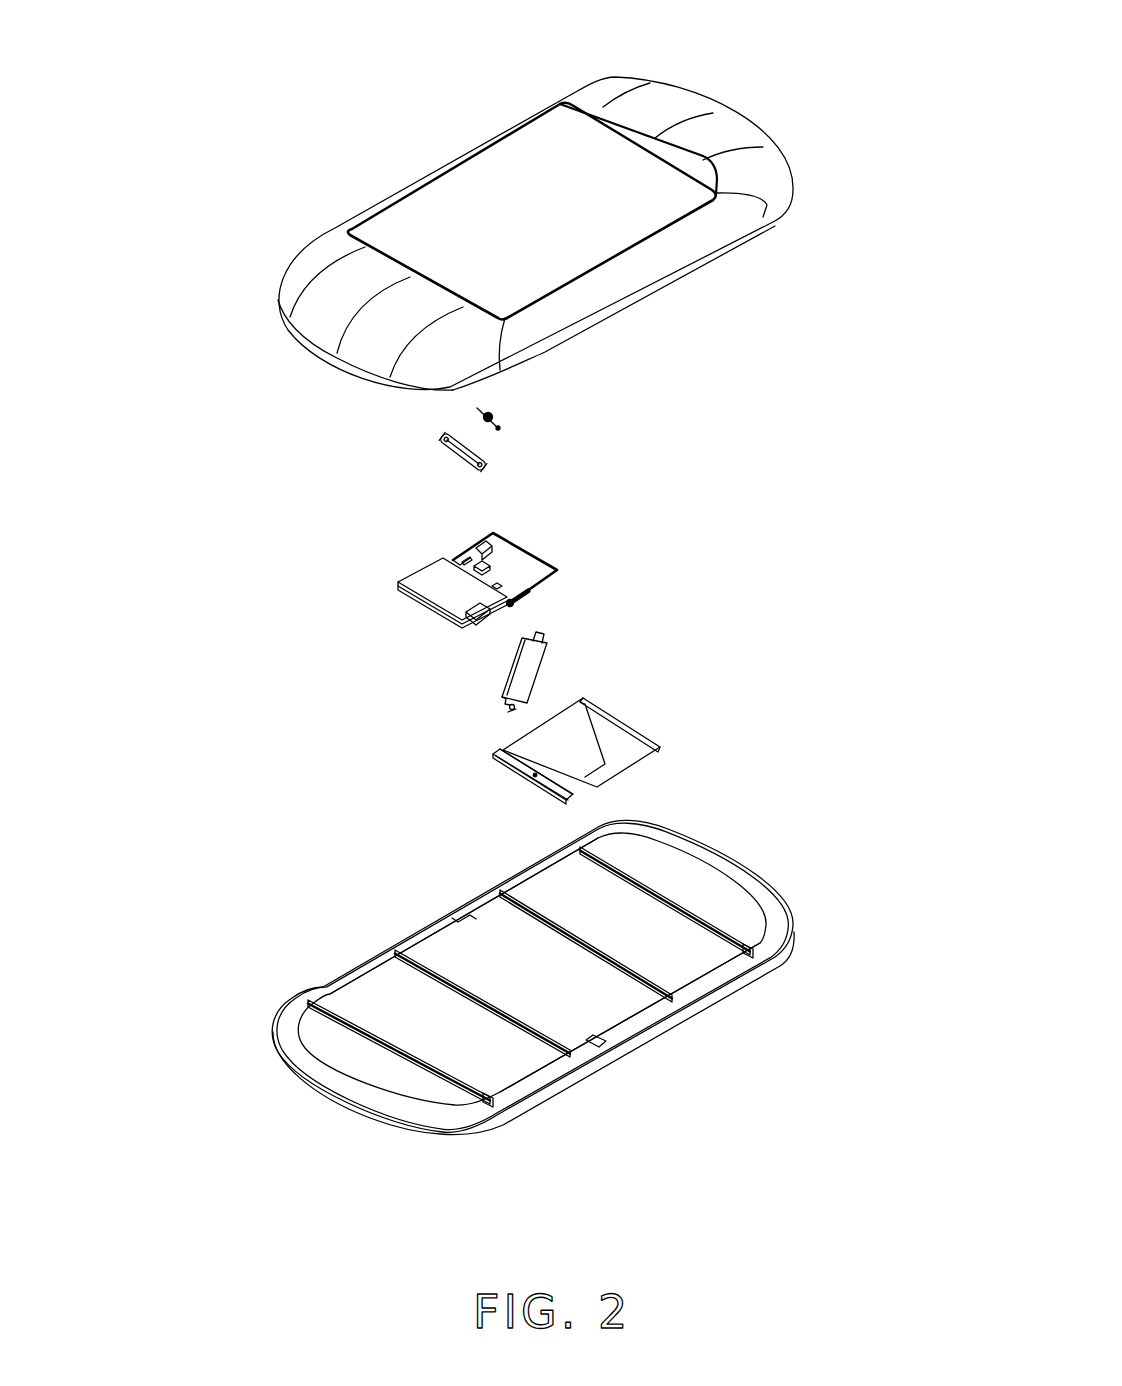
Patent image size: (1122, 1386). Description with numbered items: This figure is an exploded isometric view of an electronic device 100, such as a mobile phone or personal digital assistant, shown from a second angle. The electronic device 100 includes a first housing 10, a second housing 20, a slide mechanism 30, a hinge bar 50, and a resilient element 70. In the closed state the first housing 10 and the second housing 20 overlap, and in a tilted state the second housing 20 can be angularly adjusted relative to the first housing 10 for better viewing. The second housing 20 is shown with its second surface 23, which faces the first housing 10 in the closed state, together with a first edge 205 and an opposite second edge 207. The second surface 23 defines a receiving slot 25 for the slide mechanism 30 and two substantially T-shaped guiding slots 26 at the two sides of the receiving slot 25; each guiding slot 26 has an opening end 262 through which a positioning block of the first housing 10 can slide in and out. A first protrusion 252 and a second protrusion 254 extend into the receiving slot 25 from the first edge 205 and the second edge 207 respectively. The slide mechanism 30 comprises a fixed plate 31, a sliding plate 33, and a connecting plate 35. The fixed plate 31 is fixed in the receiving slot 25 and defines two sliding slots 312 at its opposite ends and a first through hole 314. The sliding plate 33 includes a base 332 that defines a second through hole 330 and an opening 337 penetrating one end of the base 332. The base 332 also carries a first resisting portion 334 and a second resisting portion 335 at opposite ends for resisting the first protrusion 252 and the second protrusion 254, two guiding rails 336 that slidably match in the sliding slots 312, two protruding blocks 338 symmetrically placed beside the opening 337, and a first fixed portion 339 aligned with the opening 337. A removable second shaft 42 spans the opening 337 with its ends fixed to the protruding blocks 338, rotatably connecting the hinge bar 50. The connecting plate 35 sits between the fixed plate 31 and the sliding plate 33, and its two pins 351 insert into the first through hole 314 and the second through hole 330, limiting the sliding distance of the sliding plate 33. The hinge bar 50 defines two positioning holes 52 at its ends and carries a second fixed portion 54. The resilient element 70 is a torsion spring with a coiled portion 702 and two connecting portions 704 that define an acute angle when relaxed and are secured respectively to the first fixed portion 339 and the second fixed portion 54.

The electronic device 100 is at (565, 28).
The first housing 10 is at (473, 188).
The second housing 20 is at (316, 943).
The second surface 23 is at (390, 1085).
The first edge 205 is at (550, 1097).
The second edge 207 is at (370, 958).
The receiving slot 25 is at (615, 1003).
The first protrusion 252 is at (600, 1047).
The second protrusion 254 is at (452, 915).
The guiding slots 26 is at (700, 912).
The opening end 262 is at (752, 952).
The slide mechanism 30 is at (698, 546).
The fixed plate 31 is at (610, 733).
The sliding slots 312 is at (495, 757).
The first through hole 314 is at (532, 783).
The sliding plate 33 is at (577, 565).
The second through hole 330 is at (513, 576).
The base 332 is at (418, 582).
The first resisting portion 334 is at (478, 618).
The second resisting portion 335 is at (462, 554).
The guiding rails 336 is at (412, 600).
The opening 337 is at (482, 567).
The protruding blocks 338 is at (483, 546).
The first fixed portion 339 is at (512, 600).
The connecting plate 35 is at (528, 667).
The pins 351 is at (510, 707).
The second shaft 42 is at (465, 558).
The hinge bar 50 is at (455, 449).
The positioning holes 52 is at (440, 440).
The second fixed portion 54 is at (487, 459).
The resilient element 70 is at (600, 374).
The coiled portion 702 is at (493, 413).
The connecting portions 704 is at (500, 430).